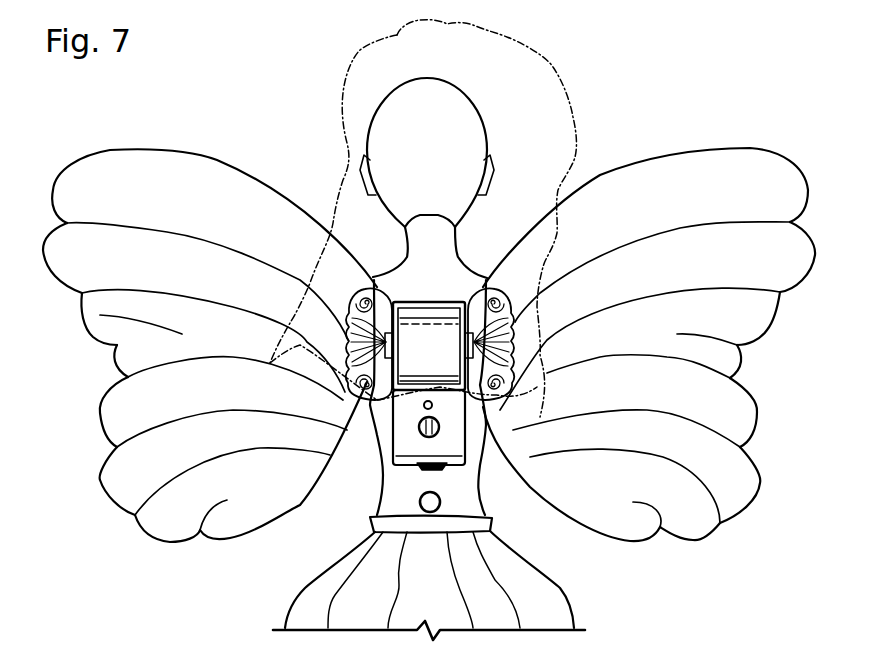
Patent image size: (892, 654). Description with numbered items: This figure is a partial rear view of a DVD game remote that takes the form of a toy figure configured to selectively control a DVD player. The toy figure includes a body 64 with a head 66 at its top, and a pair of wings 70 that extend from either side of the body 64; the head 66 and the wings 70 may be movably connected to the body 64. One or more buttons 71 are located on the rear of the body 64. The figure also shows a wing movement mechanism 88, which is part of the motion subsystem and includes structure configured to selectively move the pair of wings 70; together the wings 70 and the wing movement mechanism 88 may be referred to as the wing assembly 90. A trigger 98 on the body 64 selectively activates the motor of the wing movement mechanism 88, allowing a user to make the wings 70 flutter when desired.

The head 66 is at (439, 164).
The pair of wings 70 is at (690, 163).
The wing movement mechanism 88 is at (442, 359).
The wing assembly 90 is at (386, 254).
The body 64 is at (487, 458).
The buttons 71 is at (424, 406).
The trigger 98 is at (438, 492).